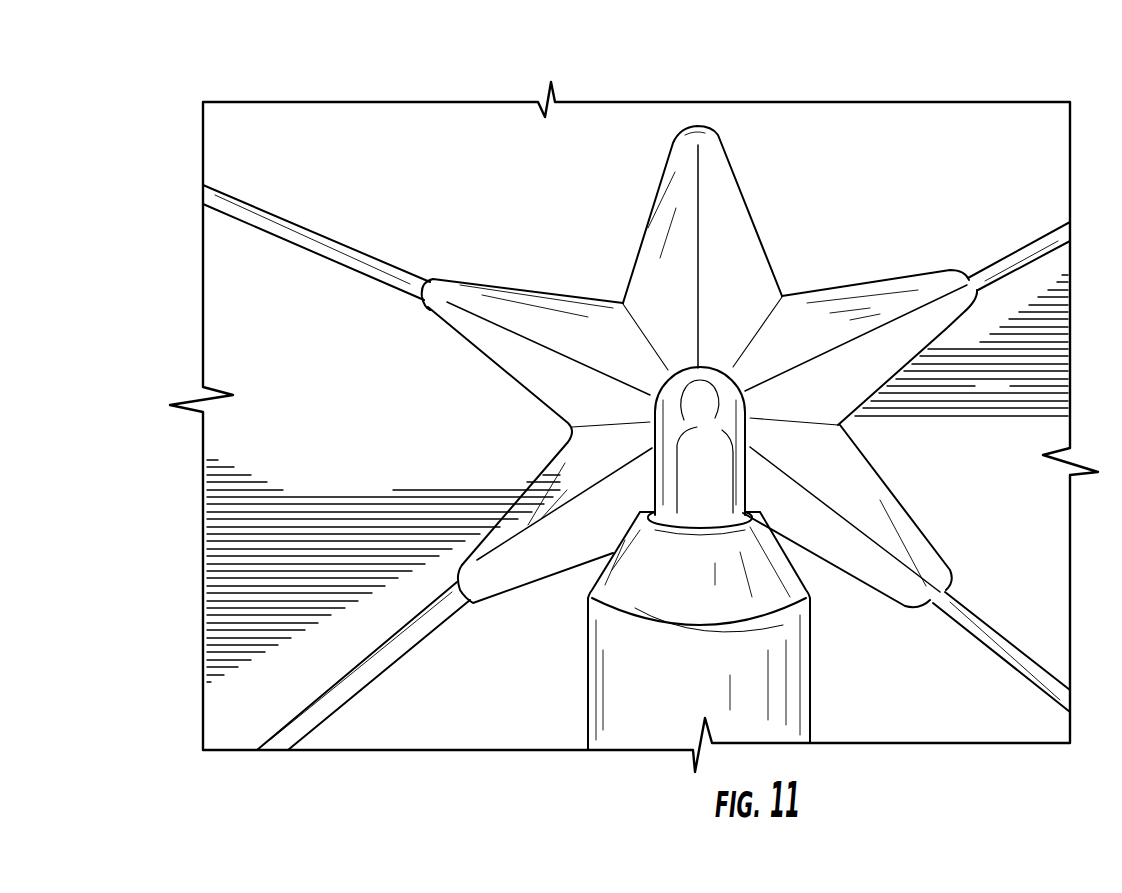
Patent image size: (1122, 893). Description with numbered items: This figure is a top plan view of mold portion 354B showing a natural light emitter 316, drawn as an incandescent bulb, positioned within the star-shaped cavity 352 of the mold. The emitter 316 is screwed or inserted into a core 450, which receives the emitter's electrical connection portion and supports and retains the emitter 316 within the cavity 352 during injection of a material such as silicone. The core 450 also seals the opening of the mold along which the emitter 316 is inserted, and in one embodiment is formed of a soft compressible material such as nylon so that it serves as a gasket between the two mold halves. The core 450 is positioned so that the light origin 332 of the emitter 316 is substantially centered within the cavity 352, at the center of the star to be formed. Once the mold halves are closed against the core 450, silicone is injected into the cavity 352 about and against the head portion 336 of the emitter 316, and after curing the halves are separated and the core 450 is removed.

The head portion 336 is at (650, 394).
The cavity 352 is at (655, 245).
The mold portion 354B is at (645, 115).
The natural light emitter 316 is at (707, 390).
The light origin 332 is at (720, 425).
The core 450 is at (607, 670).